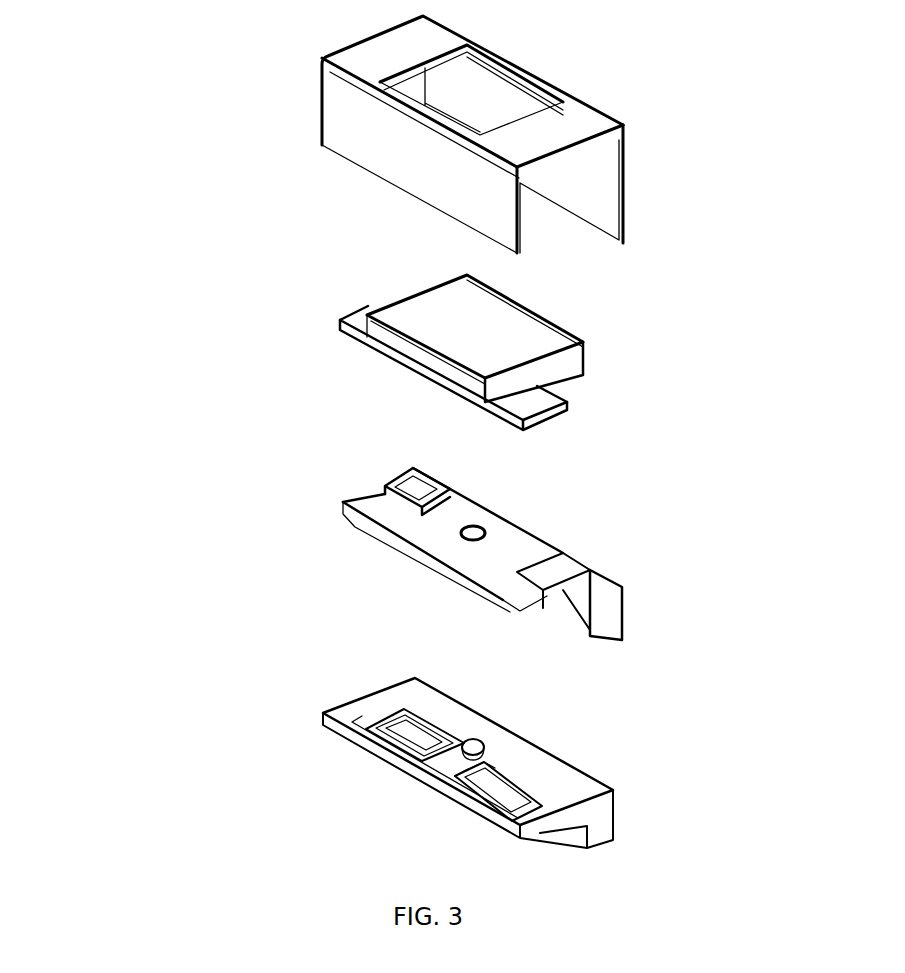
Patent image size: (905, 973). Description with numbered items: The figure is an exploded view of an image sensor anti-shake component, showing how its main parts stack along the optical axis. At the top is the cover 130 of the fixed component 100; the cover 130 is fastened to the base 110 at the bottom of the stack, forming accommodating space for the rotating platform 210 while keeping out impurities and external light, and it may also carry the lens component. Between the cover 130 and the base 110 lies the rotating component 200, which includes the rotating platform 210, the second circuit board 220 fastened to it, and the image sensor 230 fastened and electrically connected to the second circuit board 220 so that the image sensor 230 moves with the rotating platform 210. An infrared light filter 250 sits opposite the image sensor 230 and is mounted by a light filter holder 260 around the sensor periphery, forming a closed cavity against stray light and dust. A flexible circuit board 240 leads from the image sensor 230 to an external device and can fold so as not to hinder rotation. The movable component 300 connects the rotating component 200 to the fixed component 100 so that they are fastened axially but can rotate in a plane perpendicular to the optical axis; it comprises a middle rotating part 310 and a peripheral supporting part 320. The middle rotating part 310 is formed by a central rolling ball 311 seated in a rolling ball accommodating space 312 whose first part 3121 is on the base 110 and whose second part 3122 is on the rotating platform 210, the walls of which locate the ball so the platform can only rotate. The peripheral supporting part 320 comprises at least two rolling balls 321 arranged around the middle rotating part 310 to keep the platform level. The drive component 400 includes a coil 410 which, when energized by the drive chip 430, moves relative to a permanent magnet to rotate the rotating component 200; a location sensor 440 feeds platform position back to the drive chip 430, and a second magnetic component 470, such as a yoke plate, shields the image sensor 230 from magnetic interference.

The fixed component 100 is at (230, 716).
The base 110 is at (326, 737).
The cover 130 is at (334, 123).
The rotating component 200 is at (703, 260).
The rotating platform 210 is at (565, 572).
The second circuit board 220 is at (543, 407).
The image sensor 230 is at (472, 312).
The flexible circuit board 240 is at (603, 612).
The infrared light filter 250 is at (525, 330).
The light filter holder 260 is at (560, 358).
The movable component 300 is at (733, 672).
The middle rotating part 310 is at (574, 749).
The central rolling ball 311 is at (478, 744).
The rolling ball accommodating space 312 is at (574, 767).
The first part 3121 is at (485, 760).
The second part 3122 is at (473, 537).
The peripheral supporting part 320 is at (590, 797).
The rolling balls 321 is at (527, 808).
The drive component 400 is at (285, 527).
The coil 410 is at (377, 732).
The drive chip 430 is at (413, 710).
The location sensor 440 is at (448, 743).
The second magnetic component 470 is at (418, 527).